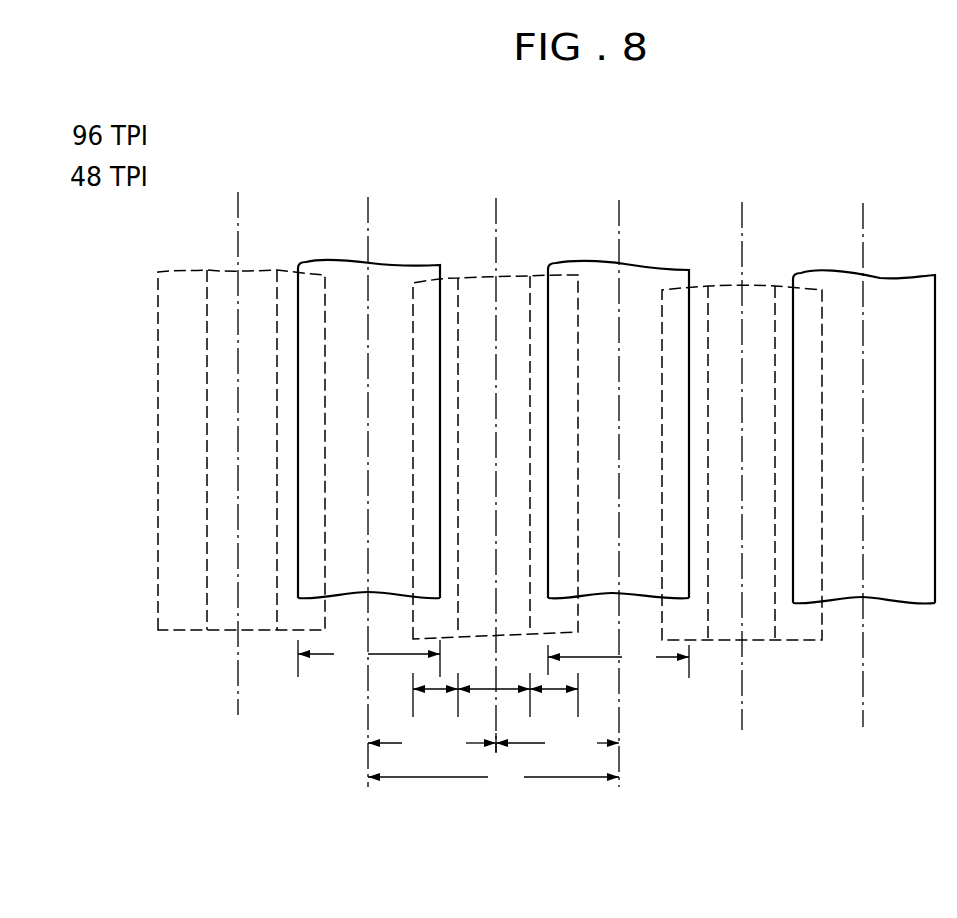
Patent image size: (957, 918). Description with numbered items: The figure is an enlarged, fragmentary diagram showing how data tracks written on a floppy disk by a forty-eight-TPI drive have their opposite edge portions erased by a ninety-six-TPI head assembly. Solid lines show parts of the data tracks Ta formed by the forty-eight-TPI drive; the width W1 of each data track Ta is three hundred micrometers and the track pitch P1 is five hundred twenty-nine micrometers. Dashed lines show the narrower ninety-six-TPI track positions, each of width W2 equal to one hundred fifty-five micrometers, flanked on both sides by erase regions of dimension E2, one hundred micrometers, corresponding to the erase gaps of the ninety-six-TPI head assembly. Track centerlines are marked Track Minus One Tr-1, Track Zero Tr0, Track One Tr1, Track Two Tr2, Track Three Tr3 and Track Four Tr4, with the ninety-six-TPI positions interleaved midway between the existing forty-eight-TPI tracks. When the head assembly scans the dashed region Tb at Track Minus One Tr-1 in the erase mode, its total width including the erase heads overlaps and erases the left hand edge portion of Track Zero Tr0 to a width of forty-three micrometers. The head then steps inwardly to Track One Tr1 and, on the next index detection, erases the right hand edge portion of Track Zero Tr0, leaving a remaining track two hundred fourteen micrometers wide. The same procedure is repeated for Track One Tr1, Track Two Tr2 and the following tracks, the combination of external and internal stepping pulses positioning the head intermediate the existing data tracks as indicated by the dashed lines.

The data track Ta is at (390, 263).
The dashed region Tb is at (190, 271).
The Track Minus One Tr-1 is at (247, 421).
The Track Zero Tr0 is at (371, 457).
The Track One Tr1 is at (501, 440).
The Track Two Tr2 is at (624, 458).
The track position 3 centerline Tr3 is at (749, 435).
The track position 4 centerline Tr4 is at (871, 434).
The width of each 48-TPI track W1 is at (493, 659).
The width of each 96-TPI track W2 is at (494, 703).
The dimension of each erase gap E2 is at (495, 695).
The track pitch P1 is at (583, 733).